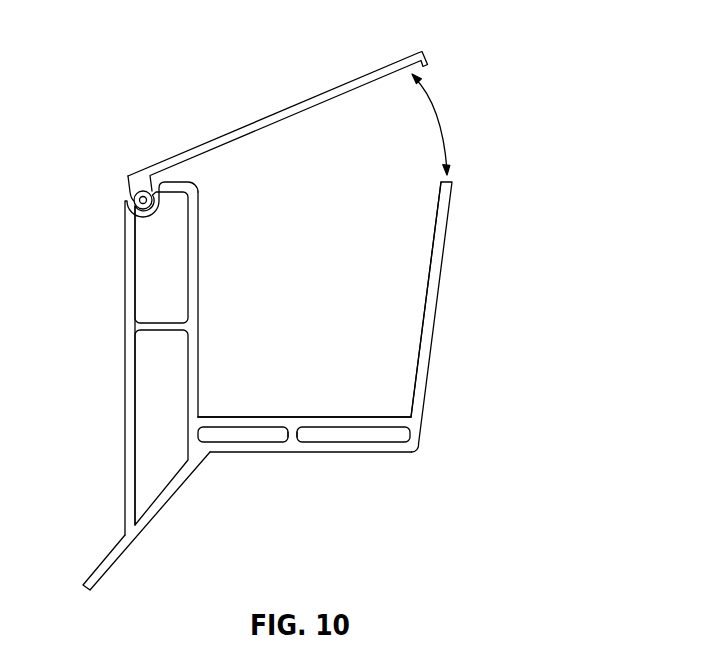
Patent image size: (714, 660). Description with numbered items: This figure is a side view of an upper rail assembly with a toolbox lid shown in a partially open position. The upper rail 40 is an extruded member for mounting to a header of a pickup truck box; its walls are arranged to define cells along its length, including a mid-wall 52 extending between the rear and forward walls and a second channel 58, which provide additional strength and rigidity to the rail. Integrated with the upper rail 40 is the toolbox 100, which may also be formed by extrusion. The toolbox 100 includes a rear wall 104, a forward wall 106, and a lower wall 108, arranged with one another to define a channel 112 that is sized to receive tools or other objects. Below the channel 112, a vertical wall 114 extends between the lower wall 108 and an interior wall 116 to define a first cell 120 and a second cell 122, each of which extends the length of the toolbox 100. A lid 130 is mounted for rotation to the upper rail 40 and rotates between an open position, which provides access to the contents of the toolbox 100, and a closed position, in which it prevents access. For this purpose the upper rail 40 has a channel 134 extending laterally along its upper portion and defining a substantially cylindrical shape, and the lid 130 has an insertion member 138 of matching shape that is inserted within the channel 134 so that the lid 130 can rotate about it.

The toolbox 100 is at (291, 320).
The upper rail 40 is at (114, 246).
The mid-wall 52 is at (148, 271).
The second channel 58 is at (148, 400).
The rear wall 104 is at (188, 278).
The forward wall 106 is at (435, 310).
The lower wall 108 is at (372, 452).
The channel 112 is at (338, 289).
The vertical wall 114 is at (290, 435).
The interior wall 116 is at (253, 417).
The first cell 120 is at (249, 436).
The second cell 122 is at (390, 436).
The lid 130 is at (275, 113).
The channel 134 is at (148, 182).
The insertion member 138 is at (128, 178).